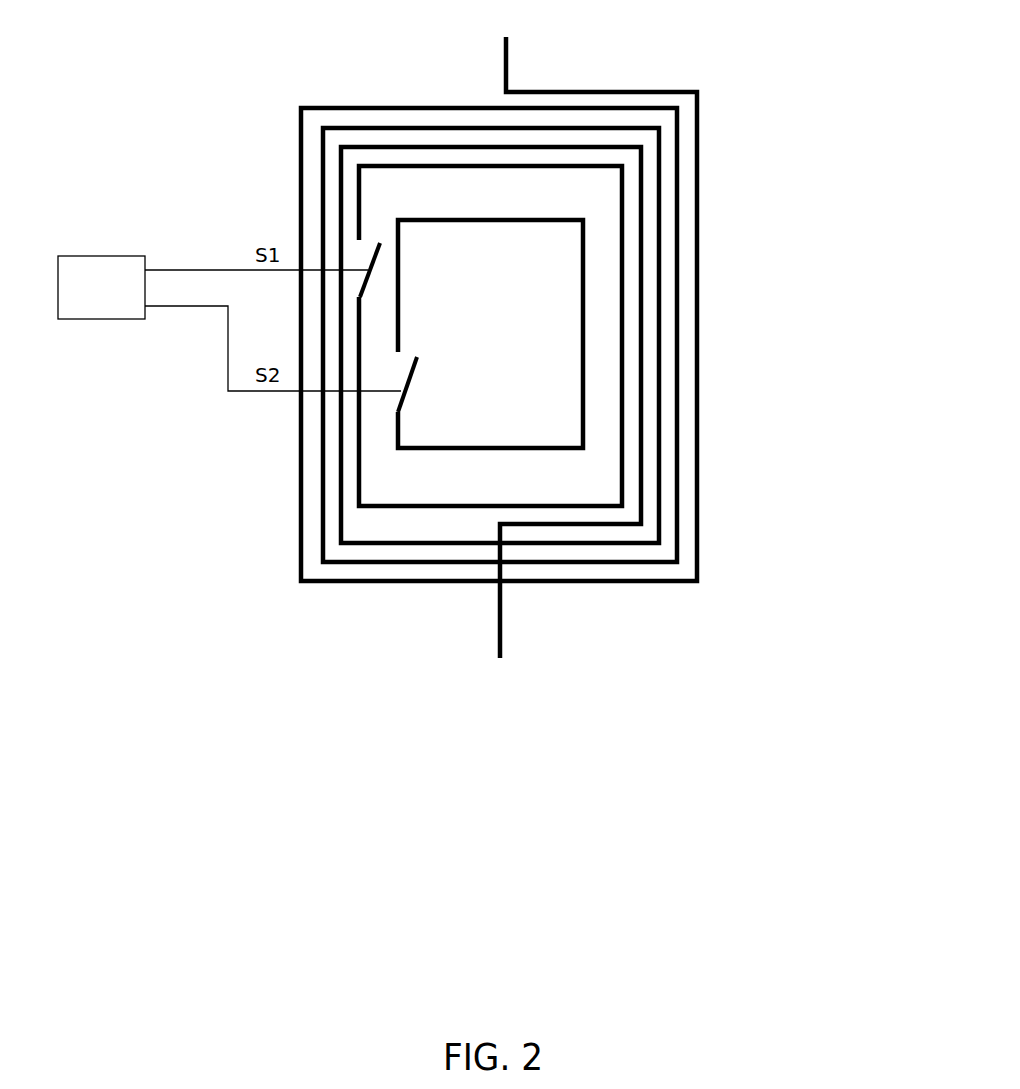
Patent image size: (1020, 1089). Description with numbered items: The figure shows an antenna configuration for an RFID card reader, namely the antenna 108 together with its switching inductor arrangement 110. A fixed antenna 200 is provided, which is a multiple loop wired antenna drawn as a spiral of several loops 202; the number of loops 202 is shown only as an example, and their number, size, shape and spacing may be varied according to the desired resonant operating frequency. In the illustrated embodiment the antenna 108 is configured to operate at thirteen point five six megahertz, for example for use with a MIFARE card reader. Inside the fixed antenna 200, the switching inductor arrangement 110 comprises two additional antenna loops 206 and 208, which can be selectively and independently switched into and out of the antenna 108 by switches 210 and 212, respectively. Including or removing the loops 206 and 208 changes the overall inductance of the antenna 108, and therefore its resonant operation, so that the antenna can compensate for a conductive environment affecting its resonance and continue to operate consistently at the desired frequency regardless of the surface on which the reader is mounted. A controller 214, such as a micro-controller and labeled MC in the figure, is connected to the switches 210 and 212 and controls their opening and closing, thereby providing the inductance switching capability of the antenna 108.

The antenna 108 is at (810, 318).
The fixed antenna 200 is at (714, 260).
The loops 202 is at (358, 127).
The additional antenna loop 206 is at (515, 218).
The additional antenna loop 208 is at (500, 169).
The switch 210 is at (412, 377).
The switch 212 is at (377, 262).
The controller 214 is at (100, 255).
The switching inductor arrangement 110 is at (131, 348).